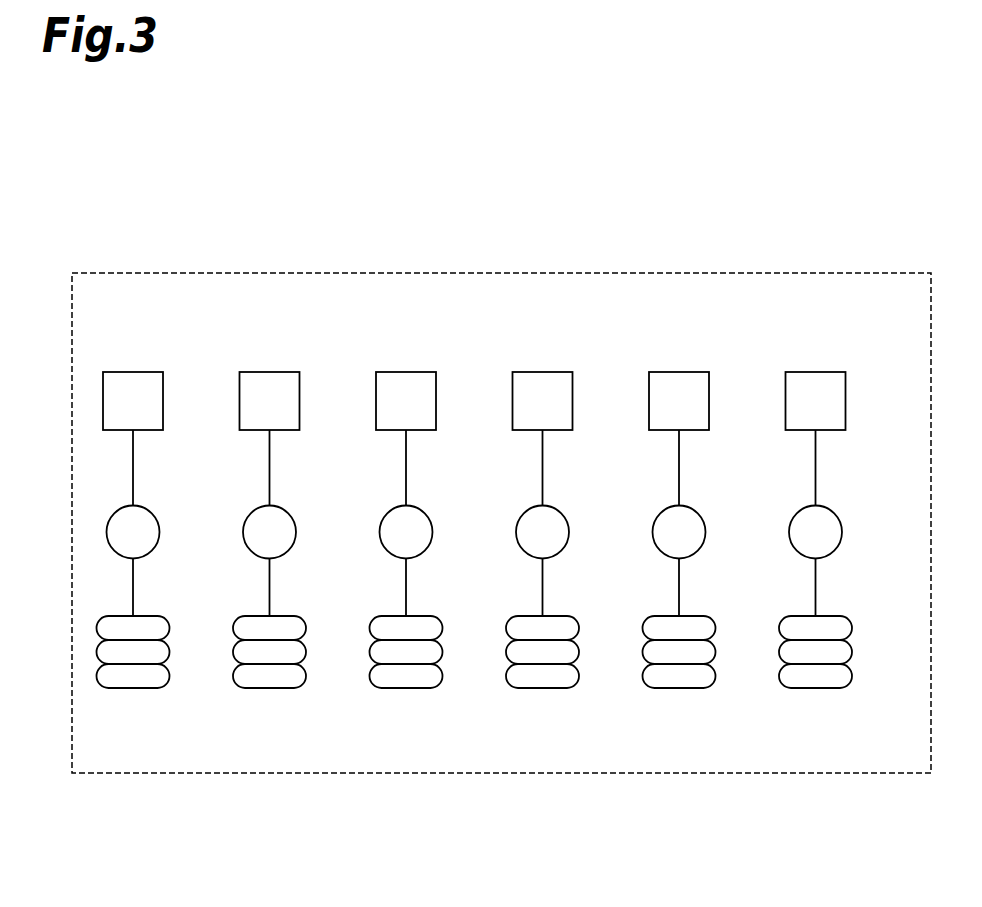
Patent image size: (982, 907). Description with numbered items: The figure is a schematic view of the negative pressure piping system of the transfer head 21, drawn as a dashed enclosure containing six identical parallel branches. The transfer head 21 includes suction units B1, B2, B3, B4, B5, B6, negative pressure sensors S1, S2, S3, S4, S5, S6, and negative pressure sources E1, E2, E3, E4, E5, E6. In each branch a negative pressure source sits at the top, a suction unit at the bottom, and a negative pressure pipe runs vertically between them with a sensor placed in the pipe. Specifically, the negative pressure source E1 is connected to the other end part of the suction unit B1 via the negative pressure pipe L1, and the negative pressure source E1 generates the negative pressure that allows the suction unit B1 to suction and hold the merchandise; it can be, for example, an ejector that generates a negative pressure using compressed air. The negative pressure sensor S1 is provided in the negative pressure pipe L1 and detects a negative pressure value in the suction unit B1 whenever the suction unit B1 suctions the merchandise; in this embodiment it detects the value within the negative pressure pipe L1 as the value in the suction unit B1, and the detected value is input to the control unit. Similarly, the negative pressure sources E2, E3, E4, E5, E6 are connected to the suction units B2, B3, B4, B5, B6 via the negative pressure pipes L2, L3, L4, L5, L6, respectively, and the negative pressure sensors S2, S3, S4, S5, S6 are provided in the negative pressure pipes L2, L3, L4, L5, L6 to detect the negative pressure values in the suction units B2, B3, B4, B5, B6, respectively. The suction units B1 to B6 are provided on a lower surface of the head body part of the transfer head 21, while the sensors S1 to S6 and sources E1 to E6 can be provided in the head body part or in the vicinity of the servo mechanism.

The transfer head 21 is at (182, 270).
The negative pressure source E1 is at (133, 370).
The negative pressure source E2 is at (270, 370).
The negative pressure source E3 is at (406, 370).
The negative pressure source E4 is at (542, 370).
The negative pressure source E5 is at (679, 370).
The negative pressure source E6 is at (816, 370).
The negative pressure pipe L1 is at (133, 470).
The negative pressure pipe L2 is at (270, 470).
The negative pressure pipe L3 is at (406, 470).
The negative pressure pipe L4 is at (542, 470).
The negative pressure pipe L5 is at (679, 470).
The negative pressure pipe L6 is at (816, 470).
The negative pressure sensor S1 is at (160, 533).
The negative pressure sensor S2 is at (296, 533).
The negative pressure sensor S3 is at (433, 533).
The negative pressure sensor S4 is at (570, 533).
The negative pressure sensor S5 is at (706, 533).
The negative pressure sensor S6 is at (842, 533).
The suction unit B1 is at (133, 690).
The suction unit B2 is at (270, 690).
The suction unit B3 is at (406, 690).
The suction unit B4 is at (542, 690).
The suction unit B5 is at (679, 690).
The suction unit B6 is at (816, 690).